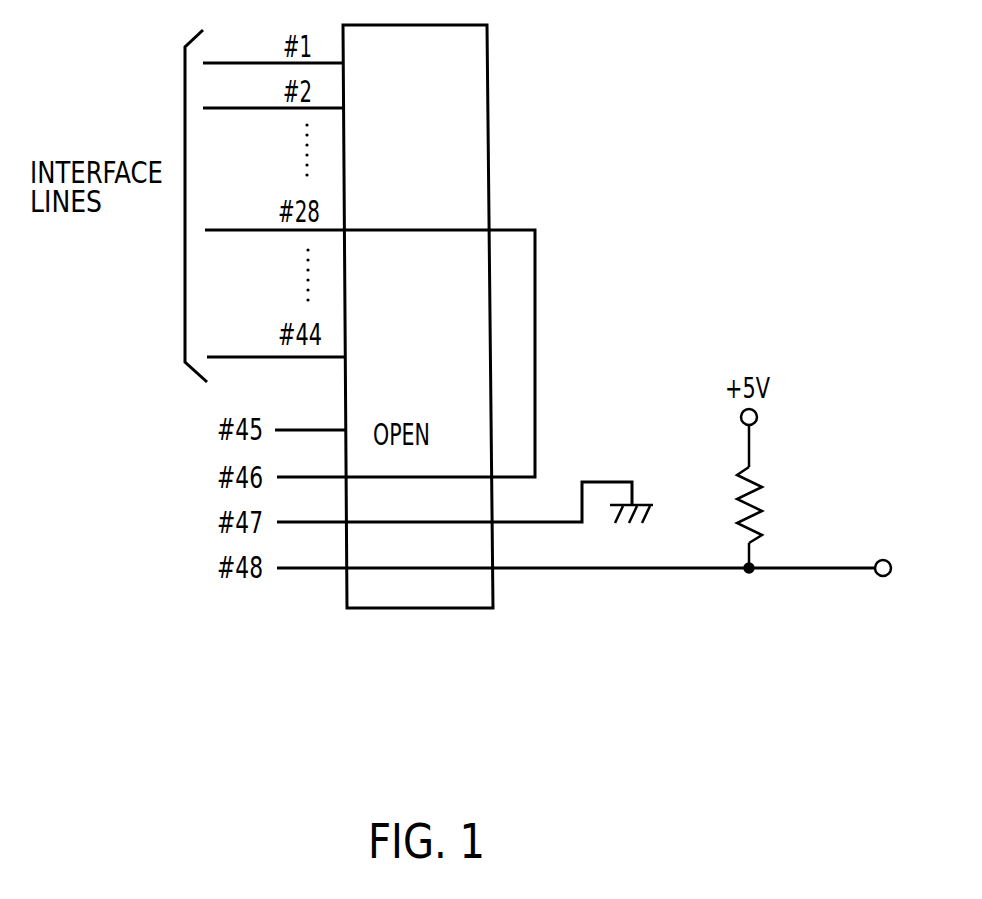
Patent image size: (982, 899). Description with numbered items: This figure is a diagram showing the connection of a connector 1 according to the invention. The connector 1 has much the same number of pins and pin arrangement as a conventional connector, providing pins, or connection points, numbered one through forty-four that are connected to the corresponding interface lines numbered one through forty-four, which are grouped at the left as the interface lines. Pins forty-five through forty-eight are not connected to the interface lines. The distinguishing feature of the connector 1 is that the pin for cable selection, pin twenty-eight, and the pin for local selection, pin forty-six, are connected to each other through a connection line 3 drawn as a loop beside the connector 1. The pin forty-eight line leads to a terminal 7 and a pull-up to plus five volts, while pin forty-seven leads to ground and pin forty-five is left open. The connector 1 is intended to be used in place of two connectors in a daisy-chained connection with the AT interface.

The connector 1 is at (475, 121).
The connection line 3 is at (535, 290).
The output terminal 7 is at (836, 568).